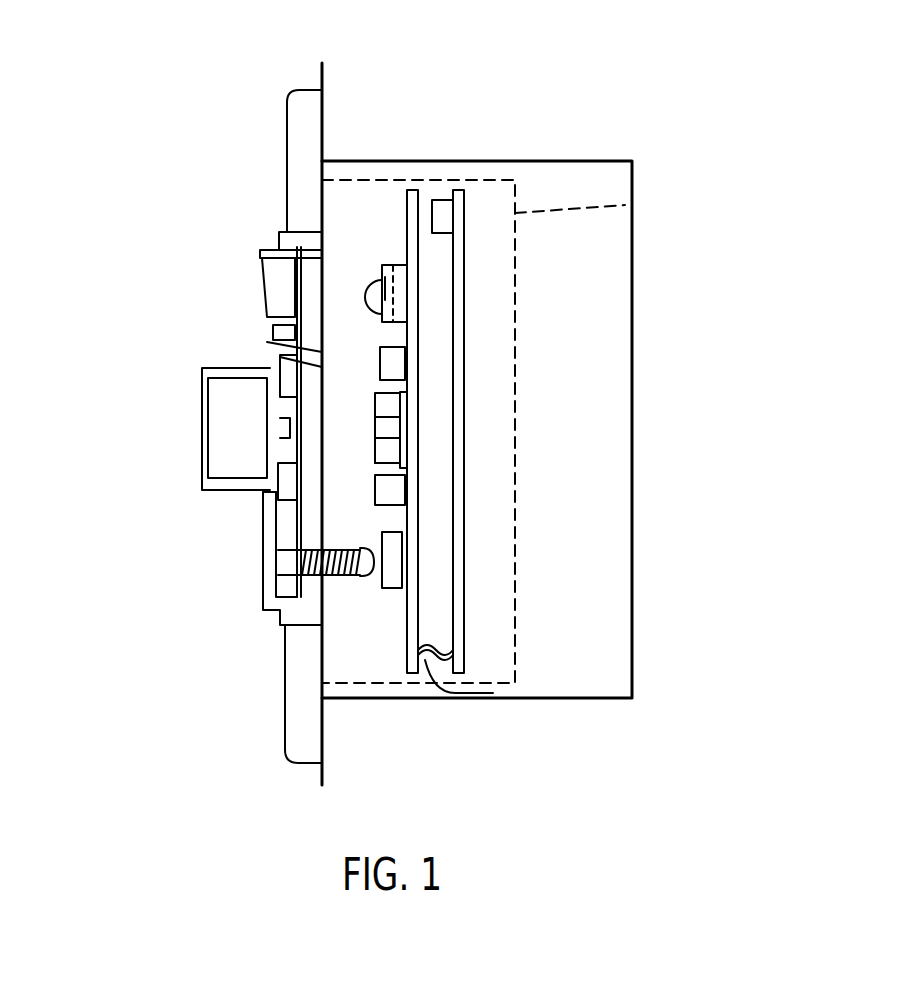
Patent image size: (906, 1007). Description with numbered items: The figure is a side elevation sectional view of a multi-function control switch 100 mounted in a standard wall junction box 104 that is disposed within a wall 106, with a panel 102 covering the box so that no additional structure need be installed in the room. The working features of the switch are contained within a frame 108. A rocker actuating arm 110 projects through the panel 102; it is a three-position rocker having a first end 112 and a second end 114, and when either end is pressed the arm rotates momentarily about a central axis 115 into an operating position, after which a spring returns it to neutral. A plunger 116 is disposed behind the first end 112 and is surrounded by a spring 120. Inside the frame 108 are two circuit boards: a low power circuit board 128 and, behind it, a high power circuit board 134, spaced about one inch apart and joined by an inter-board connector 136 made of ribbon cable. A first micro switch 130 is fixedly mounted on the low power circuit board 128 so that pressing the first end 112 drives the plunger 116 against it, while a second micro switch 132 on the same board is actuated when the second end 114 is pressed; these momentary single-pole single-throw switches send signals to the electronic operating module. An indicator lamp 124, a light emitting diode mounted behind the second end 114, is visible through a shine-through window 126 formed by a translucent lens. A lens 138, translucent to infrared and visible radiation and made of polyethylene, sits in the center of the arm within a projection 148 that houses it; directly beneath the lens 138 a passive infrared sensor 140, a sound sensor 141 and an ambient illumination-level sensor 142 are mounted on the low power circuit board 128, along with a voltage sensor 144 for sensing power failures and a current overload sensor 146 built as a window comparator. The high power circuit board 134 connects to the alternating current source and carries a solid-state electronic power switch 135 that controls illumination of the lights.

The multi-function control switch 100 is at (640, 662).
The panel 102 is at (287, 138).
The standard wall junction box 104 is at (502, 160).
The wall 106 is at (322, 72).
The frame 108 is at (632, 209).
The rocker actuating arm 110 is at (270, 585).
The first end 112 is at (200, 582).
The second end 114 is at (220, 307).
The central axis 115 is at (287, 427).
The plunger 116 is at (367, 580).
The spring 120 is at (316, 548).
The indicator lamp 124 is at (367, 277).
The shine-through window 126 is at (260, 280).
The low power circuit board 128 is at (413, 697).
The first micro switch 130 is at (393, 573).
The second micro switch 132 is at (385, 277).
The high power circuit board 134 is at (467, 203).
The solid-state electronic power switch 135 is at (442, 197).
The inter-board connector 136 is at (495, 693).
The lens 138 is at (203, 410).
The passive infrared sensor 140 is at (373, 427).
The sound sensor 141 is at (375, 450).
The ambient illumination-level sensor 142 is at (382, 407).
The voltage sensor 144 is at (390, 492).
The current overload sensor 146 is at (400, 362).
The projection 148 is at (217, 367).